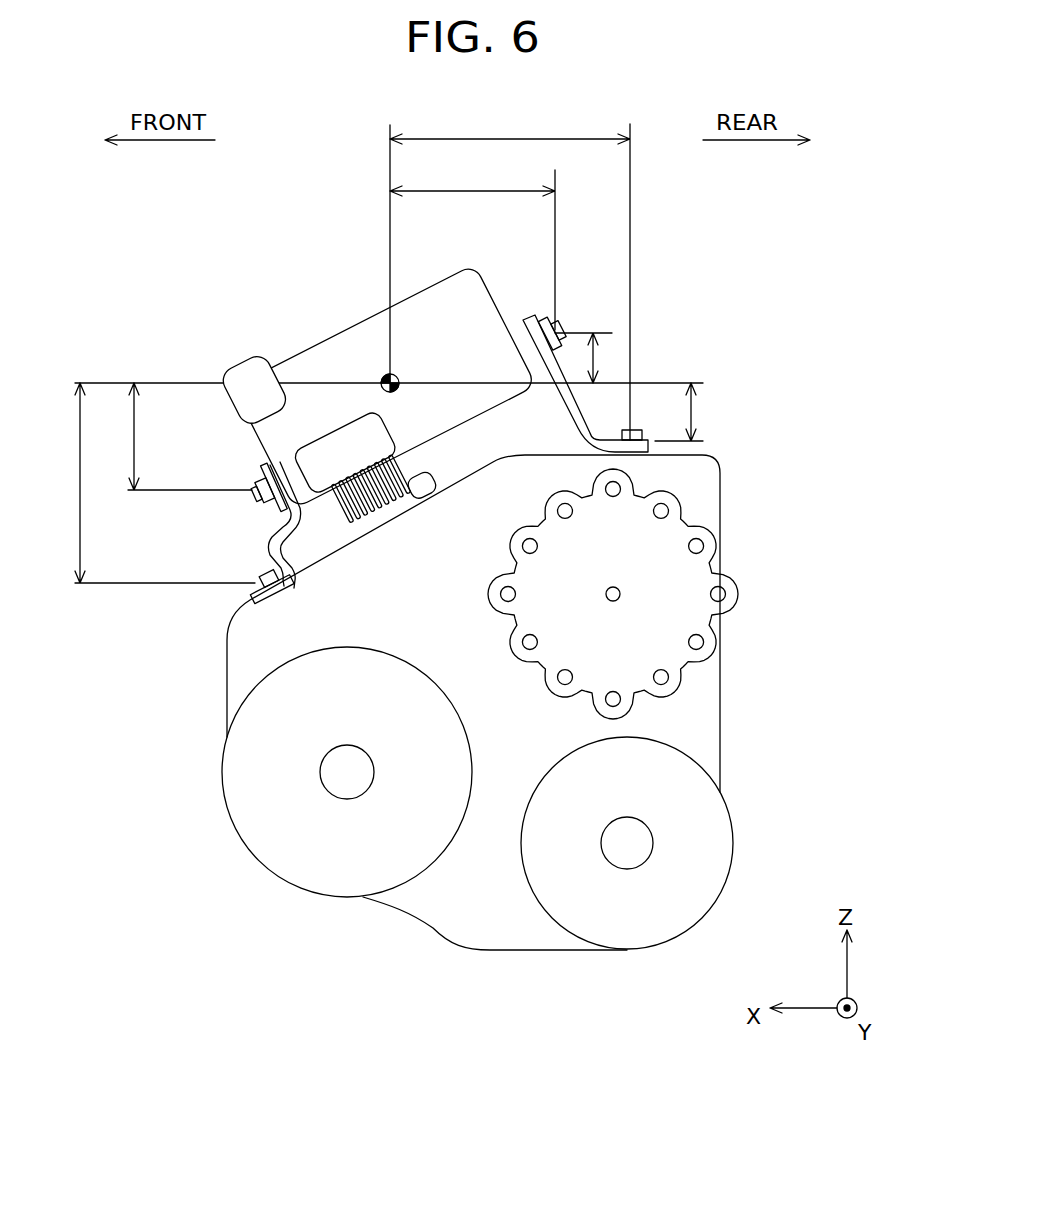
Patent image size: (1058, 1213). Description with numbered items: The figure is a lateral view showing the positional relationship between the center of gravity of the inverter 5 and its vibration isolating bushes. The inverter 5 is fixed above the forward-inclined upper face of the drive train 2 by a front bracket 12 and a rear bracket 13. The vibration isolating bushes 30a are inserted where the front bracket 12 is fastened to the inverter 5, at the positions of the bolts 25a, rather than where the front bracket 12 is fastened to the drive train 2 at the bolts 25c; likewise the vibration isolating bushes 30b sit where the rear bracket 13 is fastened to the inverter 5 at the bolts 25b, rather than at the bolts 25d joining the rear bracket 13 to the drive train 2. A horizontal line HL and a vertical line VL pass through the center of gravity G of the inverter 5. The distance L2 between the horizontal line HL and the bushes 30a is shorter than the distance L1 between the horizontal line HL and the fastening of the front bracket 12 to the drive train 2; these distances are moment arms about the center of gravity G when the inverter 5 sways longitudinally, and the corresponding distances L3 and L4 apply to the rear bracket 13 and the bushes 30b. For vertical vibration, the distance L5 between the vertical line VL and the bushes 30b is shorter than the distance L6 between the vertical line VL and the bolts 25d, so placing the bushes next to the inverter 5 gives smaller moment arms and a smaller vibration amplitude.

The drive train 2 is at (235, 683).
The inverter 5 is at (305, 367).
The front bracket 12 is at (260, 462).
The rear bracket 13 is at (560, 408).
The bolts 25a is at (260, 497).
The bolts 25b is at (558, 330).
The bolts 25c is at (255, 572).
The bolts 25d is at (635, 437).
The vibration isolating bushes 30a is at (257, 484).
The vibration isolating bushes 30b is at (545, 323).
The center of gravity G is at (387, 373).
The horizontal line HL is at (112, 383).
The vertical line VL is at (390, 165).
The distance L1 is at (151, 483).
The distance L2 is at (176, 436).
The distance L3 is at (591, 358).
The distance L4 is at (692, 412).
The distance L5 is at (472, 248).
The distance L6 is at (510, 277).